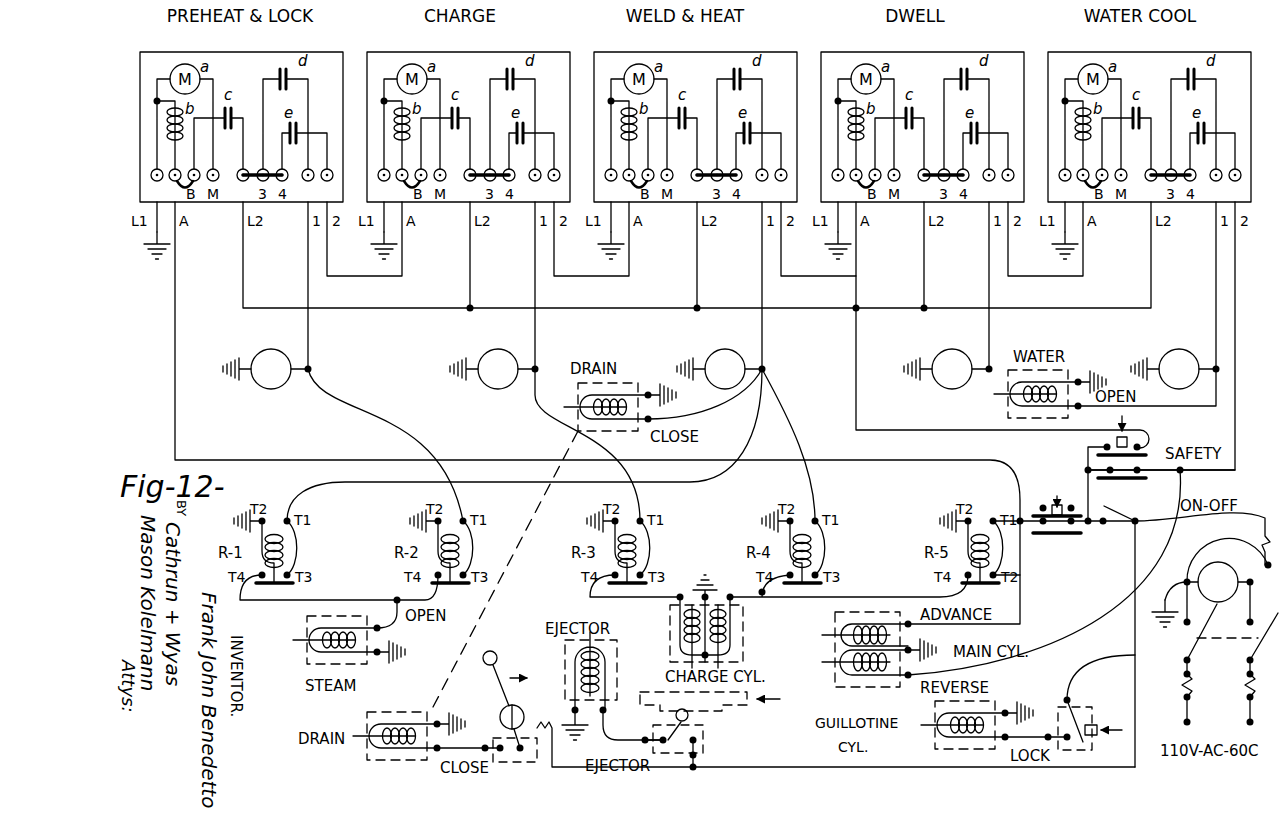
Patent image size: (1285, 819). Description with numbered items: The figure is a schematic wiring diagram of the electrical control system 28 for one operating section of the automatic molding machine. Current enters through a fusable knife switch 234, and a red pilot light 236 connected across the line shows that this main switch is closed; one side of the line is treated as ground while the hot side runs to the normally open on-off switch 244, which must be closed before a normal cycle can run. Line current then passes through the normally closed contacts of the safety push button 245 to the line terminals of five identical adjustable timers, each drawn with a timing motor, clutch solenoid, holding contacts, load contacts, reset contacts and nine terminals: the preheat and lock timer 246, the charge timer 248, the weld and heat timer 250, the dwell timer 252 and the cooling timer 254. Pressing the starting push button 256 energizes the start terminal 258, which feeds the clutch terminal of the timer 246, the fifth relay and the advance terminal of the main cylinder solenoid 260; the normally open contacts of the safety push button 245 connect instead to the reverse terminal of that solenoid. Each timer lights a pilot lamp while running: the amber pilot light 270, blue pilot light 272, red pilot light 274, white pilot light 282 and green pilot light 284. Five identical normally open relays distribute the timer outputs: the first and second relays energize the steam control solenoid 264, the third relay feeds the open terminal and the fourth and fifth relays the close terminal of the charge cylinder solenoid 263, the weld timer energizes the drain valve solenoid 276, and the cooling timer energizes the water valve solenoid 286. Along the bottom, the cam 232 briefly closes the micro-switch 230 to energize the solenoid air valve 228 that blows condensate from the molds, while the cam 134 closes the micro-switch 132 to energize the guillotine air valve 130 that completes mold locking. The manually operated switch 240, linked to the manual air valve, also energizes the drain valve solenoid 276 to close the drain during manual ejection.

The preheat and lock timer 246 is at (237, 143).
The charge timer 248 is at (464, 143).
The weld and heat timer 250 is at (691, 143).
The dwell timer 252 is at (918, 143).
The cooling timer 254 is at (1145, 143).
The amber pilot light 270 is at (287, 349).
The blue pilot light 272 is at (514, 349).
The red pilot light 274 is at (741, 349).
The drain valve solenoid 276 is at (566, 407).
The white pilot light 282 is at (968, 349).
The green pilot light 284 is at (1195, 349).
The water valve solenoid 286 is at (1008, 394).
The safety push button 245 is at (1150, 455).
The on-off switch 244 is at (1126, 518).
The starting push button 256 is at (1051, 519).
The start terminal 258 is at (1040, 560).
The red pilot light 236 is at (1219, 591).
The fusable knife switch 234 is at (1230, 654).
The guillotine air valve 130 is at (935, 713).
The micro-switch 132 is at (1075, 705).
The cam 134 is at (1097, 730).
The main cylinder solenoid 260 is at (833, 628).
The charge cylinder solenoid 263 is at (691, 630).
The solenoid air valve 228 is at (565, 665).
The cam 232 is at (730, 711).
The micro-switch 230 is at (704, 749).
The switch 240 is at (496, 706).
The steam control solenoid 264 is at (307, 645).
The electrical control system 28 is at (1282, 391).